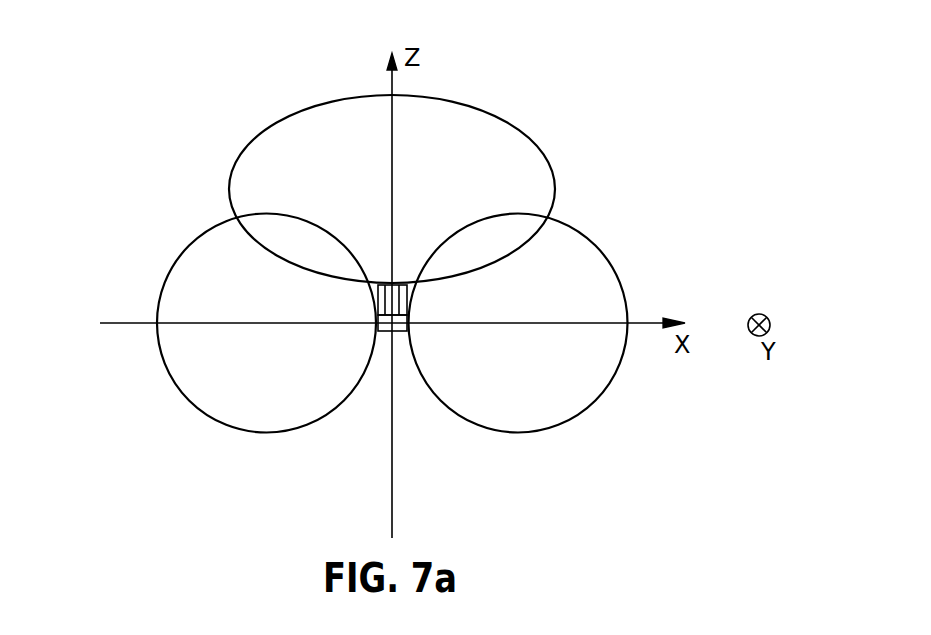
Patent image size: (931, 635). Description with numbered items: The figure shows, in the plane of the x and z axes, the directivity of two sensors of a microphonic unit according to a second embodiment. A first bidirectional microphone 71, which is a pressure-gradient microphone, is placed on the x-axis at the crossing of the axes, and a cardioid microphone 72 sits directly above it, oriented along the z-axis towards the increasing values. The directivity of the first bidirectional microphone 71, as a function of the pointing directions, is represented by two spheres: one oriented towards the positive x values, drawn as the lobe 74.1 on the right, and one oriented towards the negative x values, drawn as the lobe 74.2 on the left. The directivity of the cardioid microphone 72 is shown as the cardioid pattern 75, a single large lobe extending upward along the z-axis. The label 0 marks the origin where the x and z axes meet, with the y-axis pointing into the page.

The first bidirectional microphone 71 is at (405, 330).
The cardioid microphone 72 is at (407, 297).
The directivity sphere toward positive x values 74.1 is at (542, 432).
The directivity sphere toward negative x values 74.2 is at (240, 432).
The cardioid directivity pattern 75 is at (476, 107).
The origin 0 is at (389, 330).